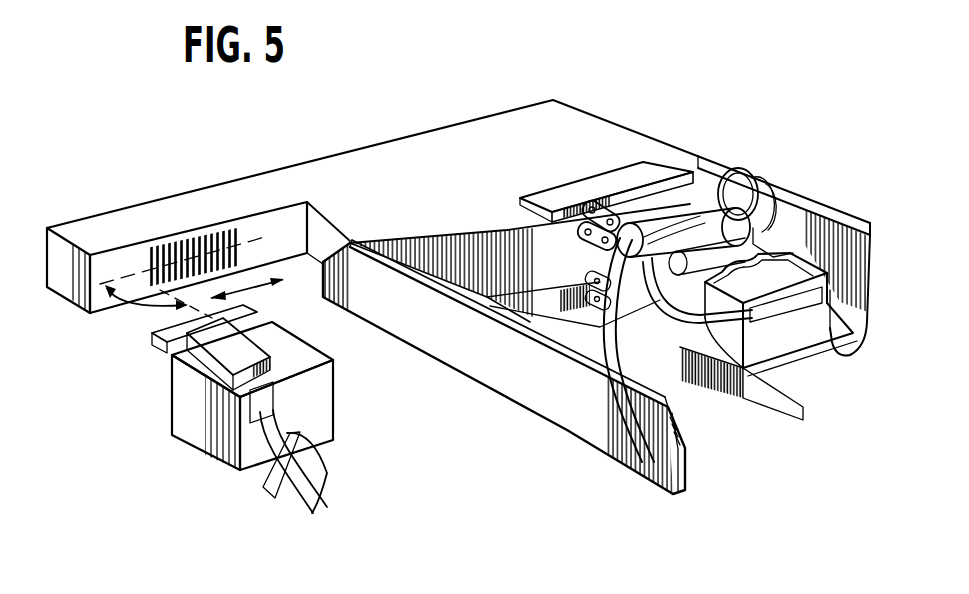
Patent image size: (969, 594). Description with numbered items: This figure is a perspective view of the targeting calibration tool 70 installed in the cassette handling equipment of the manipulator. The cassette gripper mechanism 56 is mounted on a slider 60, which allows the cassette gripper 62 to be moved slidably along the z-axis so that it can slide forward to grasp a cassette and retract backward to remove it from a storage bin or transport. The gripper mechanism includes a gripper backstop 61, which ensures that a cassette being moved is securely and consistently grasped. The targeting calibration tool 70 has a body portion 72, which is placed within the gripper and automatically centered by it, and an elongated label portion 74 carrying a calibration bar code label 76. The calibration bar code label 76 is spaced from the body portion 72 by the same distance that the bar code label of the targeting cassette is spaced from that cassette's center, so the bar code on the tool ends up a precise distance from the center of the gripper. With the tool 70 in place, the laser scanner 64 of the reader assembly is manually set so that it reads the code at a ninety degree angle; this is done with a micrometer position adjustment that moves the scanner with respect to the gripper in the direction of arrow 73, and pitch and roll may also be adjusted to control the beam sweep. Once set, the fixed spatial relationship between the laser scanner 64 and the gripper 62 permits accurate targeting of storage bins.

The cassette gripper mechanism 56 is at (775, 218).
The slider 60 is at (793, 327).
The gripper backstop 61 is at (572, 246).
The cassette gripper 62 is at (642, 160).
The laser scanner 64 is at (183, 408).
The targeting calibration tool 70 is at (538, 108).
The body portion 72 is at (480, 188).
The arrow 73 is at (247, 288).
The elongated label portion 74 is at (177, 215).
The calibration bar code label 76 is at (118, 263).